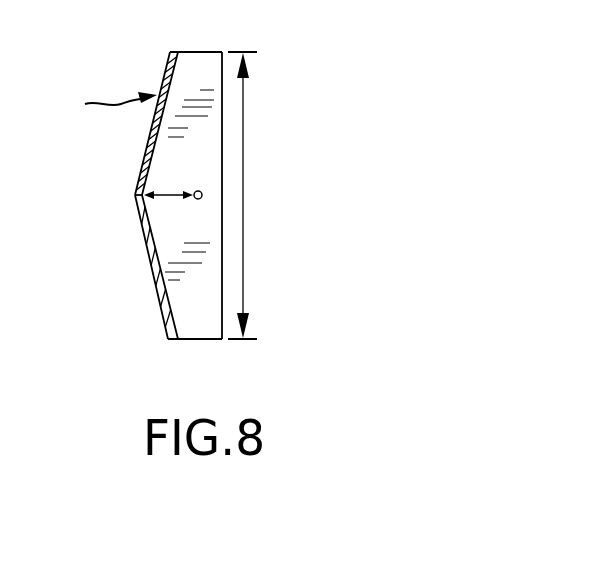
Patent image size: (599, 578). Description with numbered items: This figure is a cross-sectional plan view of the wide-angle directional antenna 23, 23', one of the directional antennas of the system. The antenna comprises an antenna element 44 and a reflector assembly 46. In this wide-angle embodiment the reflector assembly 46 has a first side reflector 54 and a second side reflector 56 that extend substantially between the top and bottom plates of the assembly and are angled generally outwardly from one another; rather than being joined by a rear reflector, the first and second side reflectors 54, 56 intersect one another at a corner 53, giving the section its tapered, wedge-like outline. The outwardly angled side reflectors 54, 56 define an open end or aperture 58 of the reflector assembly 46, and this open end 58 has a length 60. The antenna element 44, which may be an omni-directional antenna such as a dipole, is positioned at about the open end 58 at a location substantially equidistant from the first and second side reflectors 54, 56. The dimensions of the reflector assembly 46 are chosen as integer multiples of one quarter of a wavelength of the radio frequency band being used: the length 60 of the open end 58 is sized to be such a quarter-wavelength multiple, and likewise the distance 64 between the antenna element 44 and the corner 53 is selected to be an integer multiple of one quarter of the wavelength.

The wide-angle antenna 23 is at (224, 191).
The wide-angle antenna 23' is at (184, 205).
The antenna element 44 is at (203, 194).
The reflector assembly 46 is at (109, 104).
The corner 53 is at (136, 195).
The first side reflector 54 is at (153, 146).
The second side reflector 56 is at (160, 317).
The open end 58 is at (222, 283).
The length 60 is at (243, 222).
The distance 64 is at (170, 196).